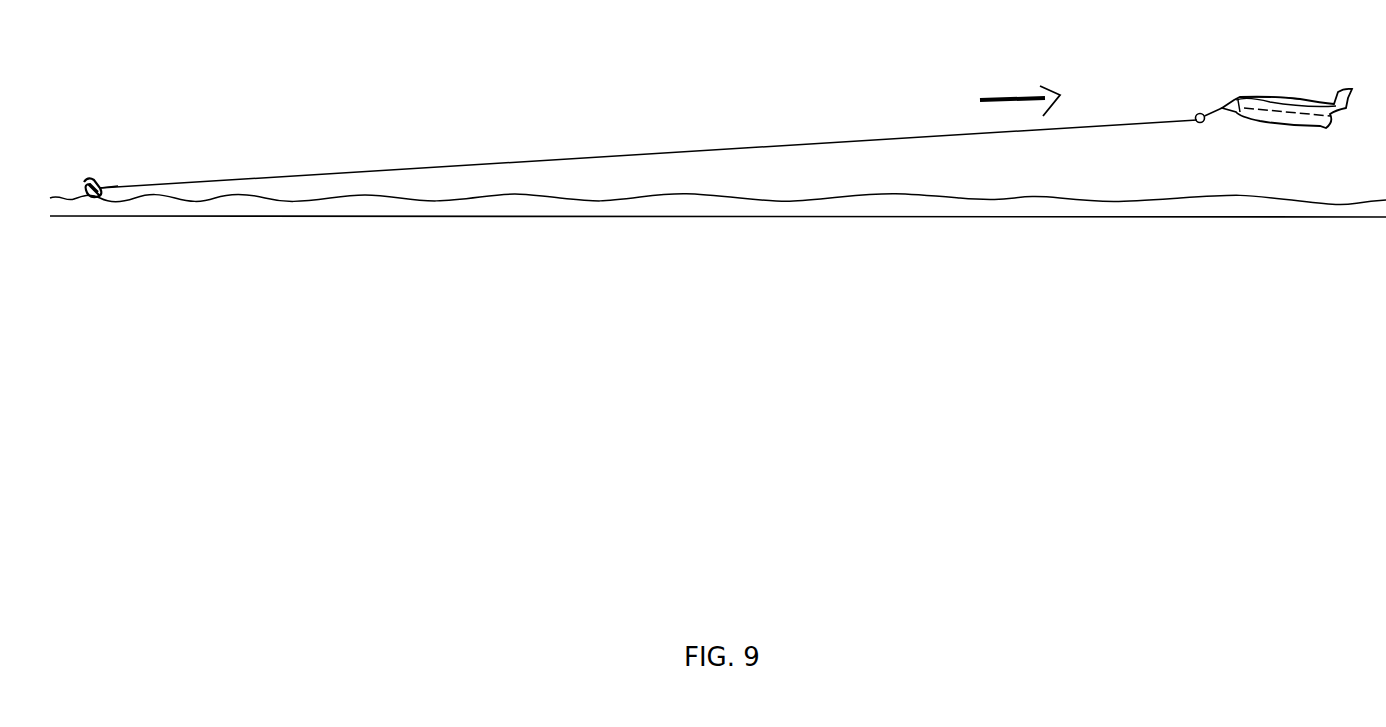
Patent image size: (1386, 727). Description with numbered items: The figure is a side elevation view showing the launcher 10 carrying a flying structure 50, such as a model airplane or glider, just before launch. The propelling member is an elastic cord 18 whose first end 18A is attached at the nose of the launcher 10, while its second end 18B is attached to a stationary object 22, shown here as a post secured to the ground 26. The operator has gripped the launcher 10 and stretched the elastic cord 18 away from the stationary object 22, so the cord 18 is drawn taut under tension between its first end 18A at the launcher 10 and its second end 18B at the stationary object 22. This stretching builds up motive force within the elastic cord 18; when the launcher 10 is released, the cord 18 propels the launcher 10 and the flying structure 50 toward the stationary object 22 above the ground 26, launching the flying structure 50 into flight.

The launcher 10 is at (1260, 146).
The elastic cord 18 is at (577, 159).
The first end of the elastic cord 18A is at (1190, 114).
The second end of the elastic cord 18B is at (102, 186).
The stationary object 22 is at (93, 181).
The ground 26 is at (1030, 190).
The flying structure 50 is at (1291, 86).